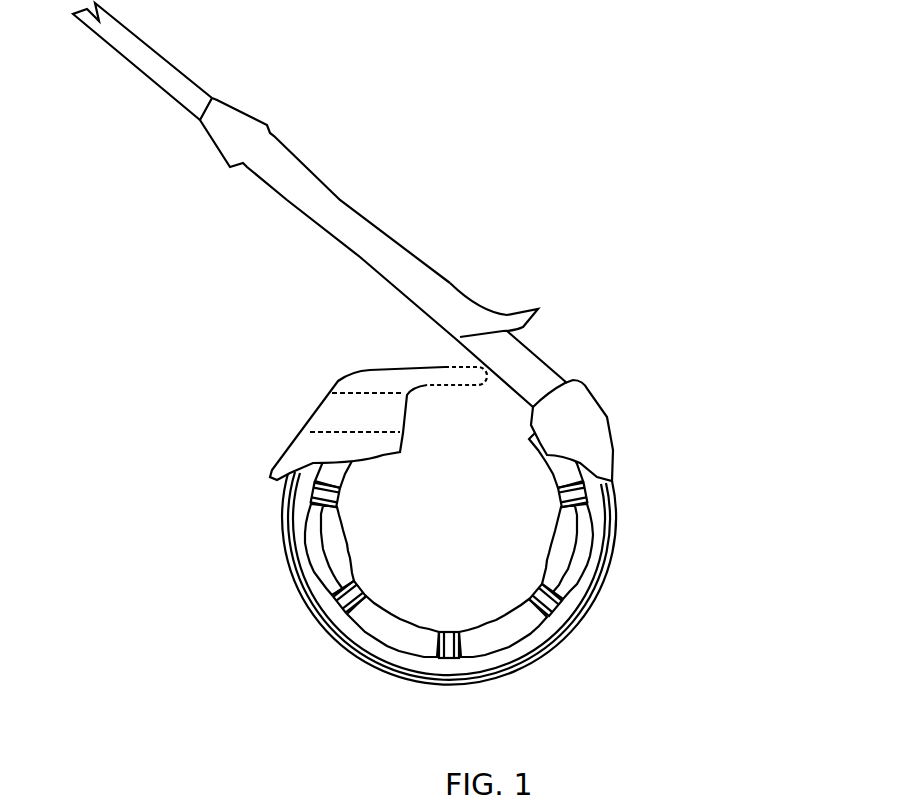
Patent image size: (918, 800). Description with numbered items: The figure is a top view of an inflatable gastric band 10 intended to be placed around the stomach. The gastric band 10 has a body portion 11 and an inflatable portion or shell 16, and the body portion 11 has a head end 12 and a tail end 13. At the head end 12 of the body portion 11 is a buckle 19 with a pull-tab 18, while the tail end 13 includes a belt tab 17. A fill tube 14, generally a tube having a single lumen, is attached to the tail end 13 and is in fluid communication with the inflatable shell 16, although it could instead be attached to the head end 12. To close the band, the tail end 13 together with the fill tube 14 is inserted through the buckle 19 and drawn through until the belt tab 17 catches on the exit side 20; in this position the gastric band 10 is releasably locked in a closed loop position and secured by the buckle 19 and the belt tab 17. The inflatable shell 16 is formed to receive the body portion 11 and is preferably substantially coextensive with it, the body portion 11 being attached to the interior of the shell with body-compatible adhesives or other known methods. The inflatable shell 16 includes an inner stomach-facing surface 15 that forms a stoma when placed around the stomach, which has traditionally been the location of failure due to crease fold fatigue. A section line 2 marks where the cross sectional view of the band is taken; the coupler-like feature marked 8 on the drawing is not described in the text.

The gastric band 10 is at (427, 378).
The body portion 11 is at (580, 607).
The head end 12 is at (324, 365).
The tail end 13 is at (370, 179).
The fill tube 14 is at (142, 38).
The inner stomach-facing surface 15 is at (559, 540).
The inflatable shell 16 is at (482, 639).
The belt tab 17 is at (549, 302).
The pull-tab 18 is at (348, 330).
The buckle 19 is at (319, 417).
The exit side 20 is at (340, 388).
The line 2- 2 is at (538, 613).
The coupler 8 is at (365, 584).